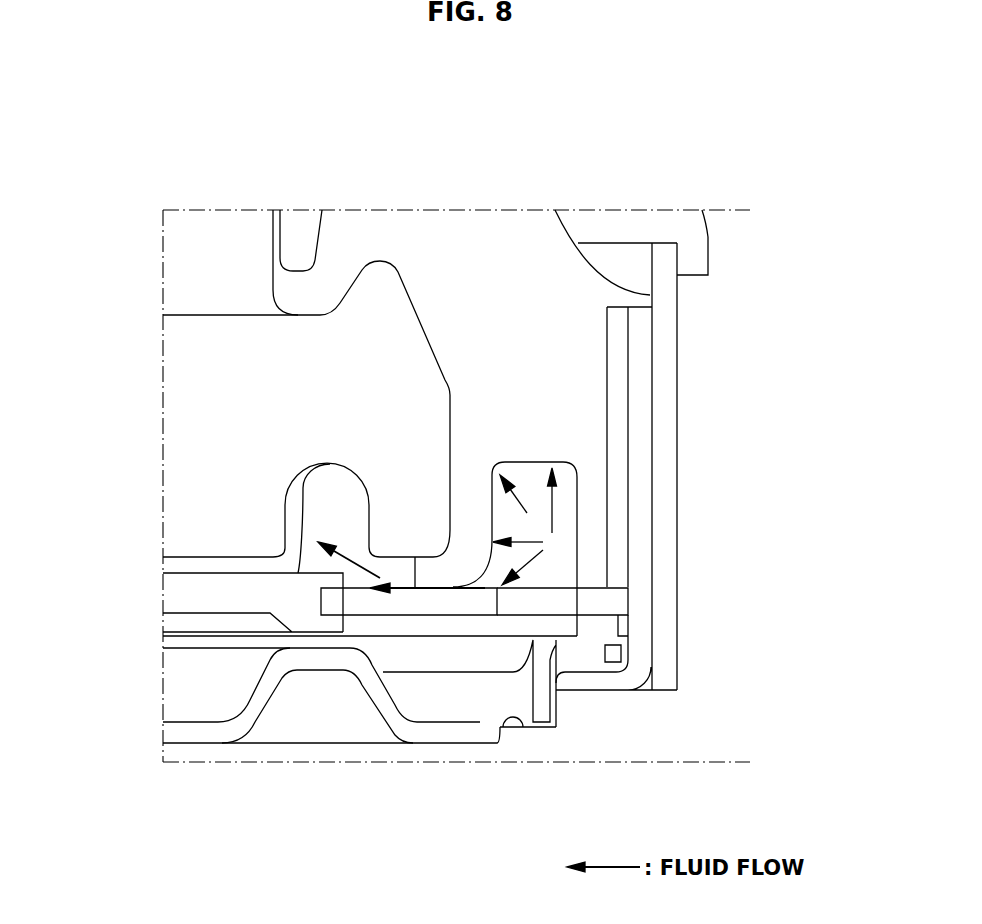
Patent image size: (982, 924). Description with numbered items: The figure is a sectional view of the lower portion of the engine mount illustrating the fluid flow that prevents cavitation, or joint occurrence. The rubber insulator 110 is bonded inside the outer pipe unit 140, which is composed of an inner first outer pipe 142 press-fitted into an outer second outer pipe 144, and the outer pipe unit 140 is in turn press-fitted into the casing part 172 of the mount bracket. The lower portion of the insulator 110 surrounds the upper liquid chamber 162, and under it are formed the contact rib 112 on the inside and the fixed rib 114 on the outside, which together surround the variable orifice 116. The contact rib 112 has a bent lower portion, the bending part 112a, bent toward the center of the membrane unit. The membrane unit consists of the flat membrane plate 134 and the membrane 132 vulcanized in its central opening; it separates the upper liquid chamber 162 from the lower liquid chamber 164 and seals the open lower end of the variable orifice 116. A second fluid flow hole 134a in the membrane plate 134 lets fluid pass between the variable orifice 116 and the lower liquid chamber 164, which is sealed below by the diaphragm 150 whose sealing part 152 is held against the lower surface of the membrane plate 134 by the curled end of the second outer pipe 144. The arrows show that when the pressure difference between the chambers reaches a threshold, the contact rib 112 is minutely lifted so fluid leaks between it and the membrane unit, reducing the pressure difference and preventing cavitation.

The insulator 110 is at (597, 237).
The contact rib 112 is at (468, 517).
The bending part 112a is at (423, 577).
The fixed rib 114 is at (593, 560).
The variable orifice 116 is at (532, 570).
The membrane 132 is at (175, 596).
The membrane plate 134 is at (370, 603).
The second fluid flow hole 134a is at (558, 597).
The outer pipe unit 140 is at (810, 357).
The first outer pipe 142 is at (620, 432).
The second outer pipe 144 is at (640, 377).
The diaphragm 150 is at (197, 733).
The sealing part 152 is at (603, 630).
The upper liquid chamber 162 is at (221, 409).
The lower liquid chamber 164 is at (438, 705).
The casing part 172 is at (695, 257).